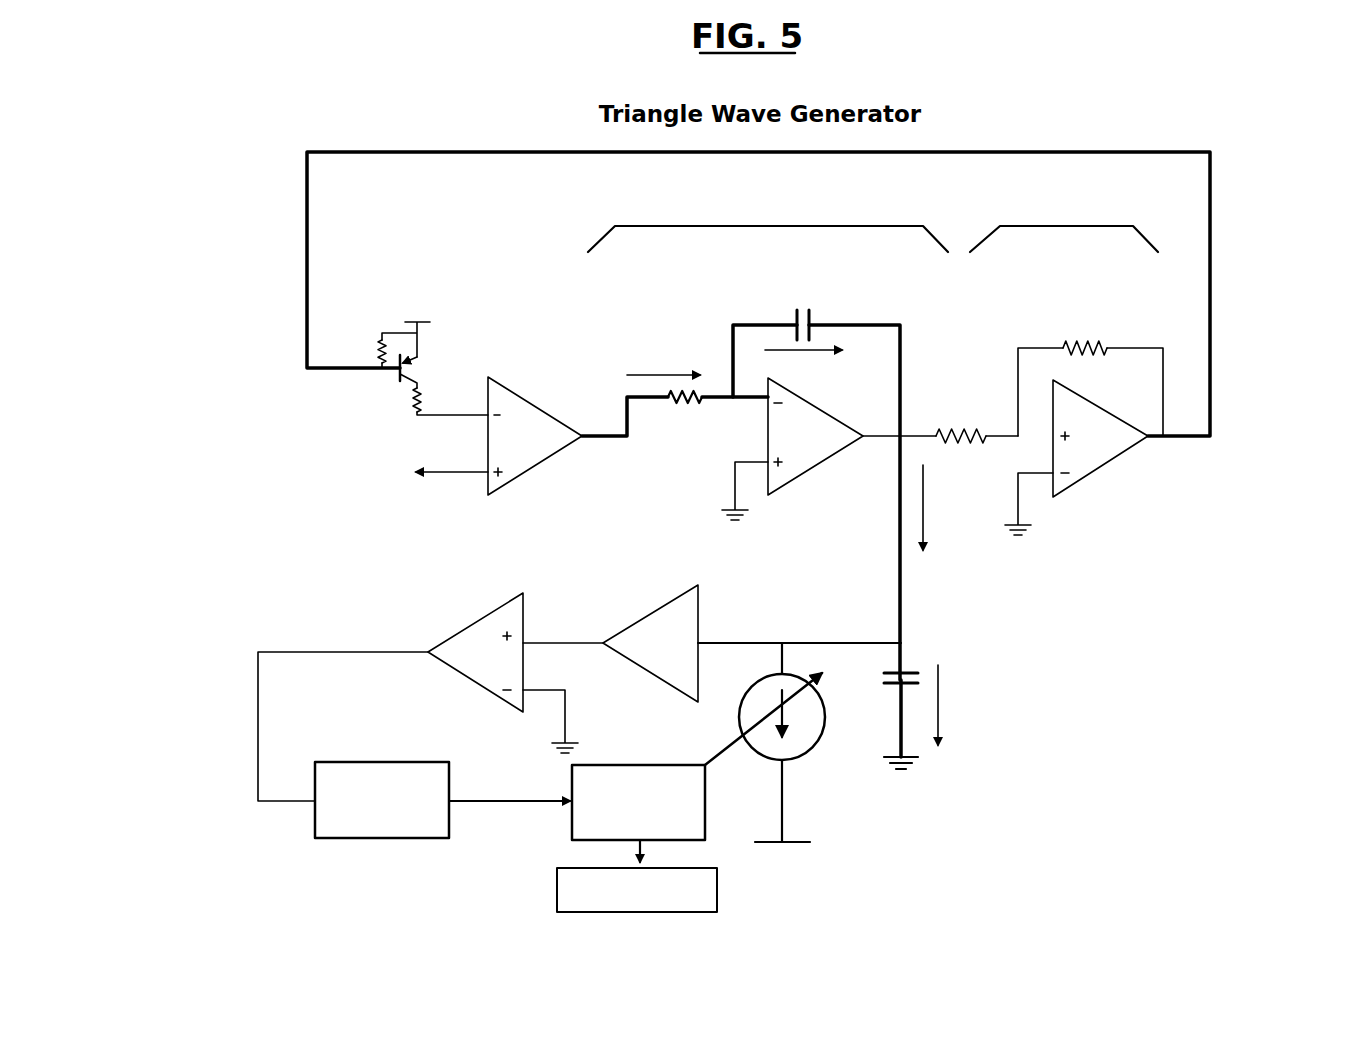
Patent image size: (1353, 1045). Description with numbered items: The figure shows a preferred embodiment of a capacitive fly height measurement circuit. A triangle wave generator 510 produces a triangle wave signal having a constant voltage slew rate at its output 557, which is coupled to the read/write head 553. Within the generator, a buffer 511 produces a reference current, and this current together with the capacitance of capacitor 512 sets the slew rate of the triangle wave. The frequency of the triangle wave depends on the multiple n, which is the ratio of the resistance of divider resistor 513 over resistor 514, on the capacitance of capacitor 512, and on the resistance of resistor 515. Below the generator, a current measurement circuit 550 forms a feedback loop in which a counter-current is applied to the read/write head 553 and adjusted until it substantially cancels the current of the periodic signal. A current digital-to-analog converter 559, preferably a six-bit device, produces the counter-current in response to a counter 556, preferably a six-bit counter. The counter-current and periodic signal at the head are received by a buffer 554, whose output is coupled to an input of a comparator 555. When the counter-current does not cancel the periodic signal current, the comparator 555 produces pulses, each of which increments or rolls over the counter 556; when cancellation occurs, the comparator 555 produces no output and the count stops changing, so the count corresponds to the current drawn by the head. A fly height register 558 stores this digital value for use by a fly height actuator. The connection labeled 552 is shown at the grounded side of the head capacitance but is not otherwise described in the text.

The triangle wave generator 510 is at (200, 125).
The buffer 511 is at (498, 377).
The capacitor 512 is at (812, 325).
The divider resistor 513 is at (1100, 346).
The resistor 514 is at (946, 428).
The resistor 515 is at (670, 405).
The current measurement circuit 550 is at (200, 555).
The ground connection 552 is at (903, 730).
The read/write head 553 is at (908, 672).
The buffer 554 is at (675, 598).
The comparator 555 is at (495, 605).
The counter 556 is at (415, 838).
The output 557 is at (900, 527).
The fly height register 558 is at (717, 890).
The current digital-to-analog converter (I-DAC) 559 is at (672, 765).